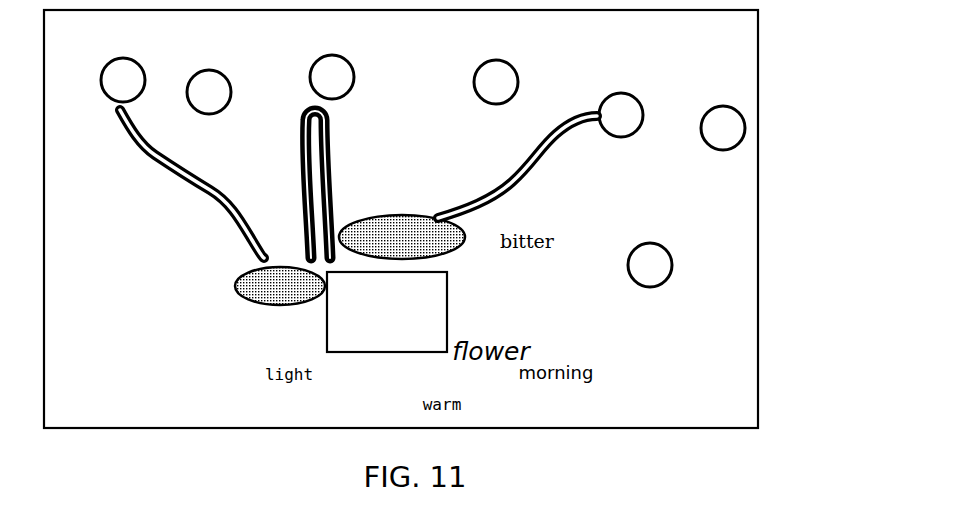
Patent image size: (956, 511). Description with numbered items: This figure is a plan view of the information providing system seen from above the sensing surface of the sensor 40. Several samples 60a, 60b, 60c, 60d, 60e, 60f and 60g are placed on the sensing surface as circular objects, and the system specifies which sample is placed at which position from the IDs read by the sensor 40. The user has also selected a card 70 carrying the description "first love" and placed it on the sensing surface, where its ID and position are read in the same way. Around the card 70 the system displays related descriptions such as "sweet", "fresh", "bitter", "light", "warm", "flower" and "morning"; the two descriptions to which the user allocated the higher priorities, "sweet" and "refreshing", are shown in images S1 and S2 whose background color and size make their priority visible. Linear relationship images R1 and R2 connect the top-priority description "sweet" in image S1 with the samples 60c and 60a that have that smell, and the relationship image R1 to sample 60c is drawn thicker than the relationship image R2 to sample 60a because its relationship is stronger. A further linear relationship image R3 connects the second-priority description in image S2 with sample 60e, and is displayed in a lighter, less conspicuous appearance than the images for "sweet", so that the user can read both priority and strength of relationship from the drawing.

The sensor 40 is at (758, 60).
The sample 60a is at (107, 97).
The sample 60b is at (226, 77).
The sample 60c is at (354, 68).
The sample 60d is at (518, 72).
The sample 60e is at (638, 98).
The sample 60f is at (745, 116).
The image icon 60g is at (657, 243).
The card 70 is at (447, 312).
The related description image S1 is at (240, 293).
The related description image S2 is at (382, 214).
The relationship image R1 is at (333, 165).
The relationship image R2 is at (212, 178).
The relationship image R3 is at (524, 184).